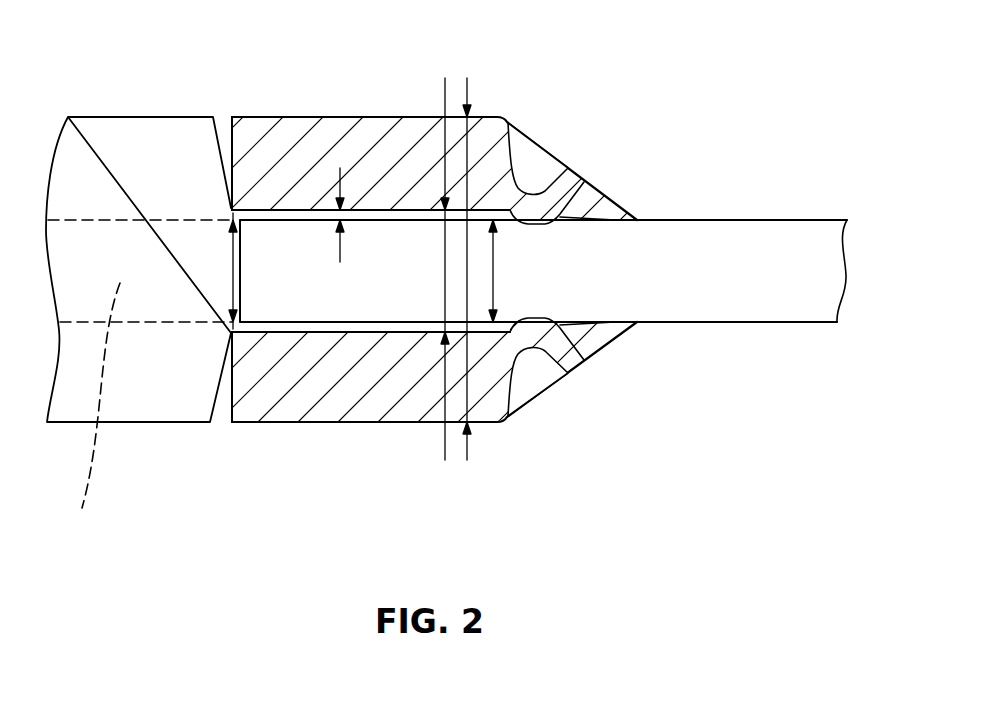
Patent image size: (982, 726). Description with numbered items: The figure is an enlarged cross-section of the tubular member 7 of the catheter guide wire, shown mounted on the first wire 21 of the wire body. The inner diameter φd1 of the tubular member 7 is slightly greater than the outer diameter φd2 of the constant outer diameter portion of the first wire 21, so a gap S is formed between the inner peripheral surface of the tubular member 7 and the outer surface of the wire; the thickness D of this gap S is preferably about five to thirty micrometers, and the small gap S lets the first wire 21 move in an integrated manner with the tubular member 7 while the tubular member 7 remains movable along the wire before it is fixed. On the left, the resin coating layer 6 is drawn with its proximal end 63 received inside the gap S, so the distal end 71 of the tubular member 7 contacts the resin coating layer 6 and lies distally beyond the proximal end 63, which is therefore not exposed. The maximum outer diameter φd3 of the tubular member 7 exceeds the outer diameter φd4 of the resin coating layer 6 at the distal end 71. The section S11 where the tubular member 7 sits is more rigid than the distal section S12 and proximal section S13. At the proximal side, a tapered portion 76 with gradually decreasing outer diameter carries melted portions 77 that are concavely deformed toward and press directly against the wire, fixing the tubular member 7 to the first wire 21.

The resin coating layer 6 is at (95, 150).
The proximal end of the resin coating layer 63 is at (241, 268).
The tubular member 7 is at (368, 118).
The distal end of the tubular member 71 is at (230, 147).
The melted portion 77 is at (535, 170).
The tapered portion 76 is at (595, 200).
The first wire 21 is at (685, 295).
The gap S is at (407, 214).
The section where the tubular member is provided S11 is at (345, 285).
The section on the distal side S12 is at (87, 412).
The section on the proximal side S13 is at (815, 297).
The thickness of the gap D is at (332, 213).
The inner diameter of the tubular member d1 is at (450, 268).
The outer diameter of the constant outer diameter portion d2 is at (514, 271).
The outer diameter of the tubular member d3 is at (450, 268).
The outer diameter of the resin coating layer d4 is at (241, 268).